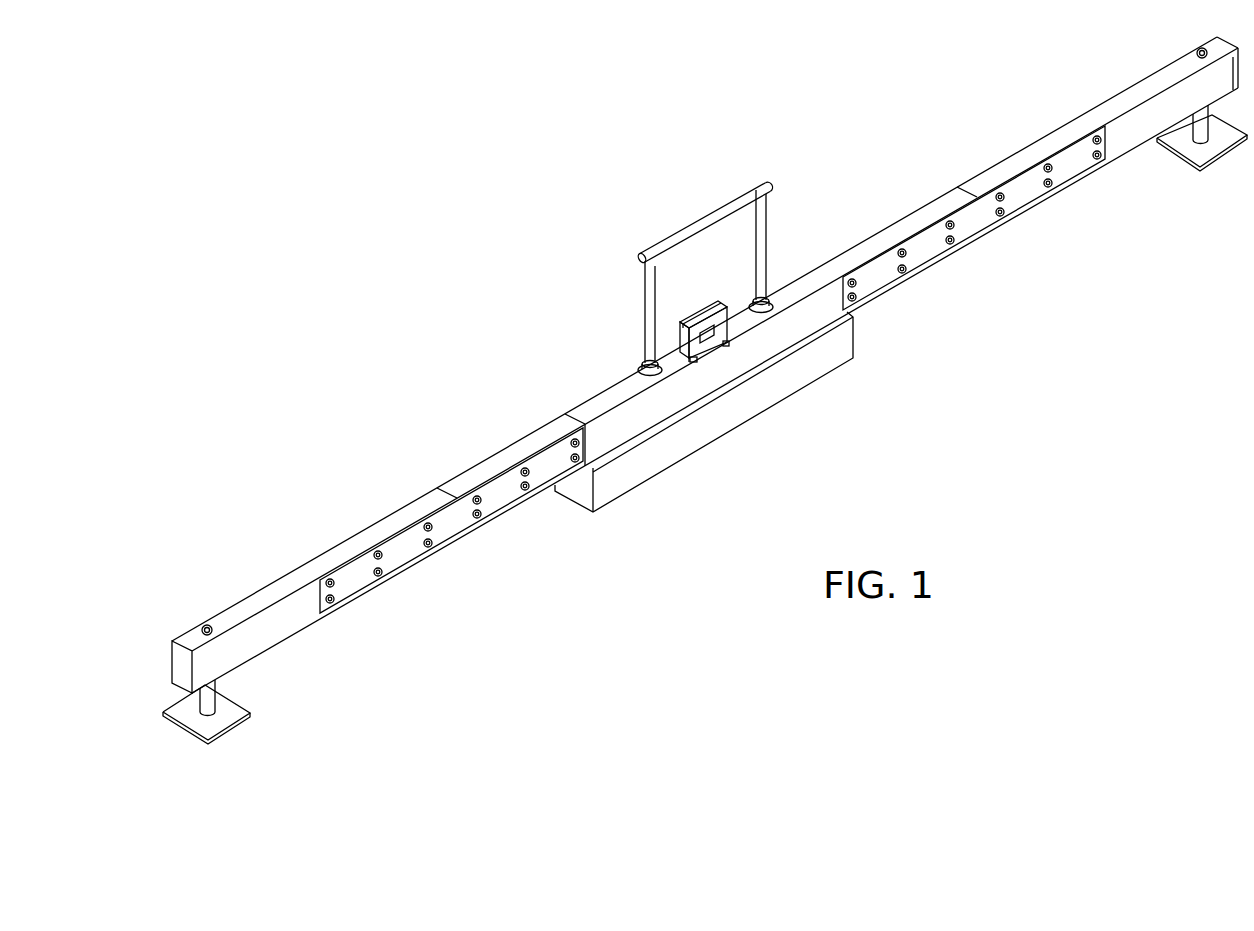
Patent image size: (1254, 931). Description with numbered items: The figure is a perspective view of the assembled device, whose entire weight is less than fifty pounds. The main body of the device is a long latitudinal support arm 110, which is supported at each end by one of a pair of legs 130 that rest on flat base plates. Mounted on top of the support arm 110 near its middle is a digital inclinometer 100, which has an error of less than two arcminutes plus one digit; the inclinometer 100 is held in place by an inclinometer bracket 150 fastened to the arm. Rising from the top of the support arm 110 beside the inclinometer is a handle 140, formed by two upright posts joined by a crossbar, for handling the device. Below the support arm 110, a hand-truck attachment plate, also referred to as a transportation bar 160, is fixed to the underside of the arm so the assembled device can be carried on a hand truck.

The digital inclinometer 100 is at (708, 300).
The latitudinal support arm 110 is at (812, 277).
The legs 130 is at (210, 698).
The handle 140 is at (668, 240).
The inclinometer bracket 150 is at (687, 343).
The transportation bar 160 is at (735, 410).